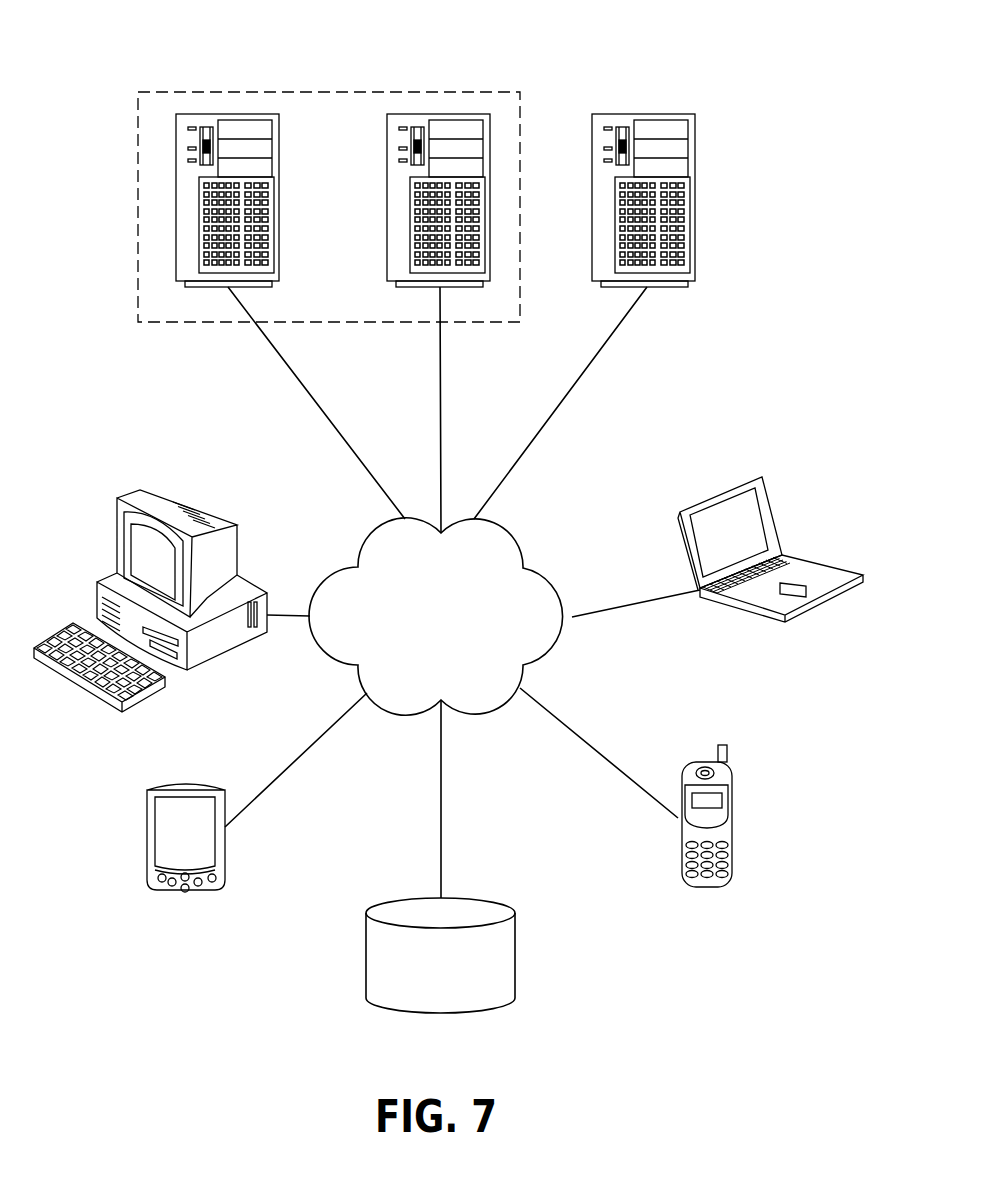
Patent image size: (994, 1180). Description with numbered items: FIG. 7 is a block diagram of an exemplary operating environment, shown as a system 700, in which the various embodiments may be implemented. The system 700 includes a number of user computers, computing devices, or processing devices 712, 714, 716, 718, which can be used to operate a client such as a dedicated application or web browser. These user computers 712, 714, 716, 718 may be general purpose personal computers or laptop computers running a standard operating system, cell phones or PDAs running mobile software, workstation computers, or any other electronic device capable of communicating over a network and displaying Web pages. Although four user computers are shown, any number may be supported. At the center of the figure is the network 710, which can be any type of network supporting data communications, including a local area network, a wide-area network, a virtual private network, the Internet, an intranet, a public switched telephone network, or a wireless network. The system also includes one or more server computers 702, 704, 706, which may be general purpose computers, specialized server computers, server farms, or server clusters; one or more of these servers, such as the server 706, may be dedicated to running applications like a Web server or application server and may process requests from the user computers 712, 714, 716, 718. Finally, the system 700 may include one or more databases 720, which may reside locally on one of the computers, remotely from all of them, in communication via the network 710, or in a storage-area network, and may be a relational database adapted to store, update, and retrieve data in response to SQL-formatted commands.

The system 700 is at (779, 134).
The server computer 702 is at (207, 114).
The server computer 704 is at (419, 114).
The server computer 706 is at (696, 196).
The network 710 is at (425, 647).
The user computer 712 is at (165, 496).
The user computer 714 is at (730, 487).
The user computer 716 is at (703, 888).
The user computer 718 is at (182, 893).
The database 720 is at (425, 996).